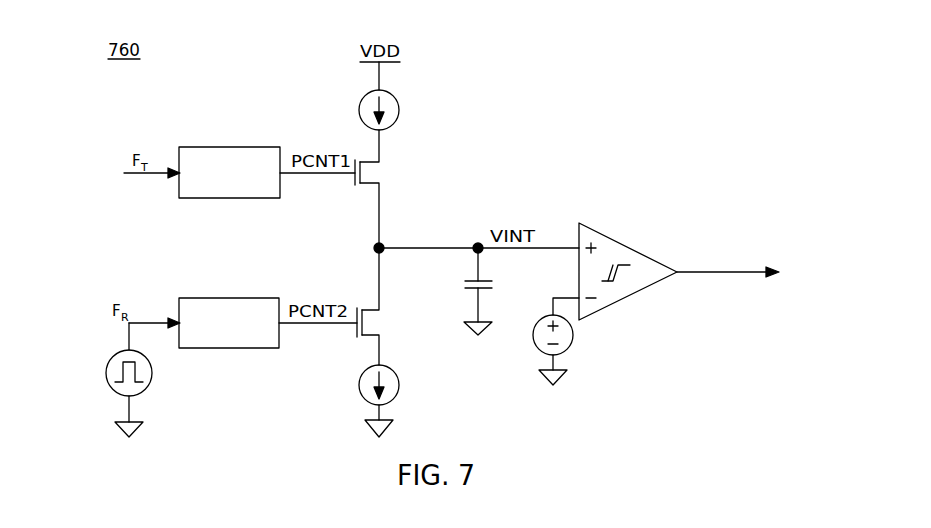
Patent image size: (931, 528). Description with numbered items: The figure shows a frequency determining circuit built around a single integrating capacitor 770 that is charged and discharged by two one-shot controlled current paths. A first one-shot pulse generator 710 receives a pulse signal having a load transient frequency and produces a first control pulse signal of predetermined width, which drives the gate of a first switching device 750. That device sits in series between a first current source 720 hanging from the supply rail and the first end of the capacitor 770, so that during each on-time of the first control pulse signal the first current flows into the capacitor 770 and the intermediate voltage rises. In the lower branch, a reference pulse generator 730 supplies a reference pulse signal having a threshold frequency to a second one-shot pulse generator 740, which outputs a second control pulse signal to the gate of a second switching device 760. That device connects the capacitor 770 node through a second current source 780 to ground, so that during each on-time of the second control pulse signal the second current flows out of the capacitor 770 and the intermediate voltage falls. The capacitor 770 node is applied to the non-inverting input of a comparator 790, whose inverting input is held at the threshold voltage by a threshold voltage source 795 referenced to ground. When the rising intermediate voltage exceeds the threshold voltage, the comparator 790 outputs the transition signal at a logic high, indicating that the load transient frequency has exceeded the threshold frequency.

The first one-shot pulse generator 710 is at (215, 147).
The first current source 720 is at (393, 129).
The reference pulse generator 730 is at (151, 379).
The second one-shot pulse generator 740 is at (213, 298).
The first switching device 750 is at (361, 190).
The second switching device 760 is at (360, 342).
The capacitor 770 is at (465, 293).
The second current source 780 is at (397, 401).
The comparator 790 is at (634, 230).
The threshold voltage source 795 is at (537, 348).